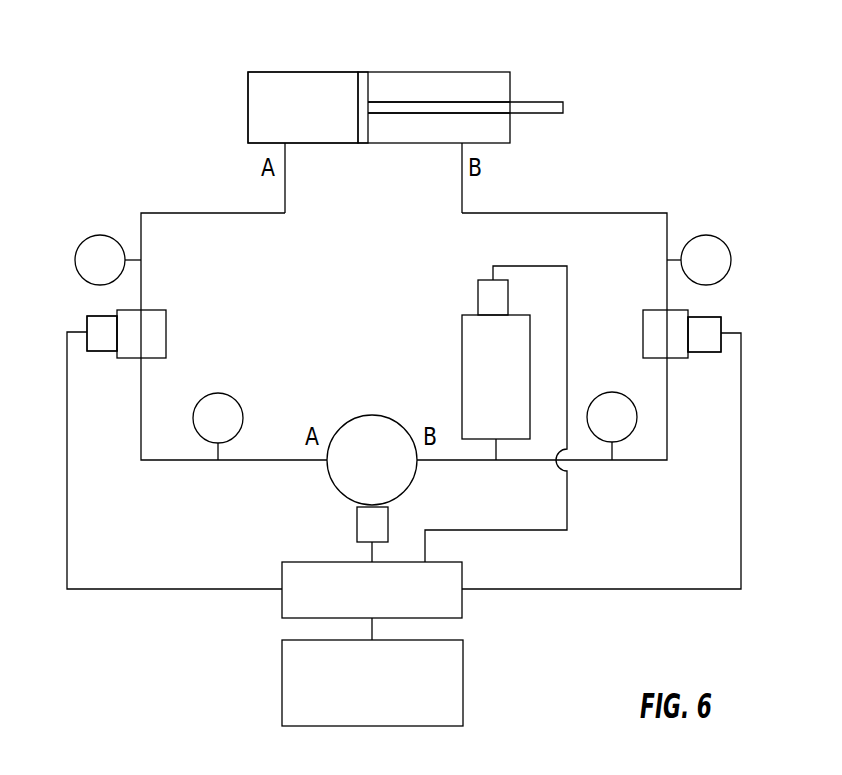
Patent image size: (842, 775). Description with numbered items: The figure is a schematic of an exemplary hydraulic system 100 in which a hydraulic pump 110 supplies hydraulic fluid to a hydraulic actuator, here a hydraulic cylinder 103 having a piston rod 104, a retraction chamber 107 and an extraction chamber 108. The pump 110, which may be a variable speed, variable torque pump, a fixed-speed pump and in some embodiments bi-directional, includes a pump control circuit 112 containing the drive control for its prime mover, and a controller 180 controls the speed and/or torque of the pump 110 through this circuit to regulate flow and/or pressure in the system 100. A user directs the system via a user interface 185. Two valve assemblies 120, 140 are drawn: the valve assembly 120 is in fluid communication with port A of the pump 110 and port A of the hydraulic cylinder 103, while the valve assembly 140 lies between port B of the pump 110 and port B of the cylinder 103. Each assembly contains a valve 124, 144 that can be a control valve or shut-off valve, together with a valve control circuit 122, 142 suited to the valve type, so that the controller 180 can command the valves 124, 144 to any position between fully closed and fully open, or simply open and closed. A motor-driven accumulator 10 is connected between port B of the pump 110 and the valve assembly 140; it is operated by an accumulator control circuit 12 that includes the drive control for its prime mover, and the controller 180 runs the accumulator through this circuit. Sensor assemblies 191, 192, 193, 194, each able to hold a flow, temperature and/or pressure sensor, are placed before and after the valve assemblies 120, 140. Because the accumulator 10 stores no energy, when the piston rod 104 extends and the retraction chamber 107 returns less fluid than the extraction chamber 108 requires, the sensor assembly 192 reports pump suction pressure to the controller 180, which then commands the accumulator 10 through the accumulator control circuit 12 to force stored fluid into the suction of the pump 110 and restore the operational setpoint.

The hydraulic system 100 is at (656, 70).
The hydraulic cylinder 103 is at (308, 72).
The piston rod 104 is at (530, 101).
The retraction chamber 107 is at (418, 92).
The extraction chamber 108 is at (270, 104).
The hydraulic pump 110 is at (362, 416).
The pump control circuit 112 is at (357, 515).
The valve assembly 120 is at (87, 325).
The valve control circuit 122 is at (97, 351).
The valve 124 is at (166, 330).
The valve assembly 140 is at (710, 317).
The valve control circuit 142 is at (707, 352).
The valve 144 is at (655, 310).
The motor-driven accumulator 10 is at (462, 350).
The accumulator control circuit 12 is at (485, 280).
The controller 180 is at (462, 572).
The user interface 185 is at (463, 705).
The sensor assembly 191 is at (731, 262).
The sensor assembly 192 is at (632, 435).
The sensor assembly 193 is at (218, 393).
The sensor assembly 194 is at (92, 236).